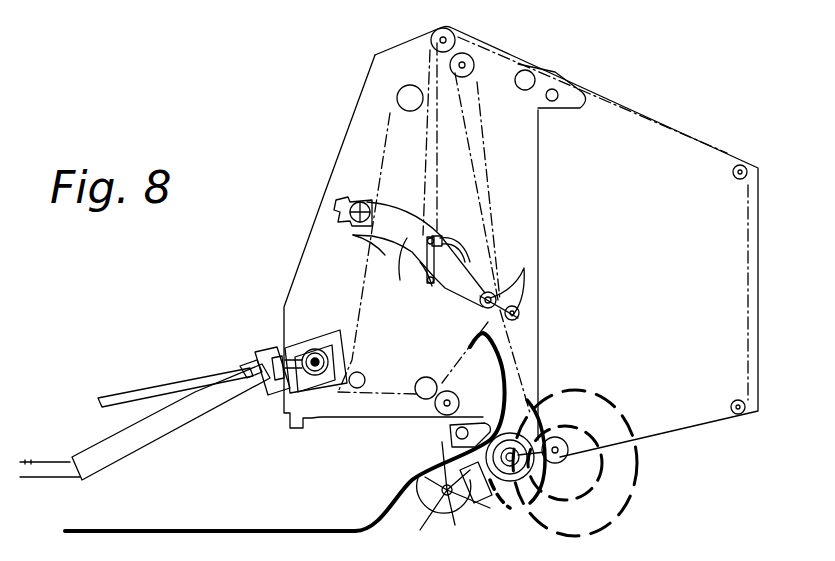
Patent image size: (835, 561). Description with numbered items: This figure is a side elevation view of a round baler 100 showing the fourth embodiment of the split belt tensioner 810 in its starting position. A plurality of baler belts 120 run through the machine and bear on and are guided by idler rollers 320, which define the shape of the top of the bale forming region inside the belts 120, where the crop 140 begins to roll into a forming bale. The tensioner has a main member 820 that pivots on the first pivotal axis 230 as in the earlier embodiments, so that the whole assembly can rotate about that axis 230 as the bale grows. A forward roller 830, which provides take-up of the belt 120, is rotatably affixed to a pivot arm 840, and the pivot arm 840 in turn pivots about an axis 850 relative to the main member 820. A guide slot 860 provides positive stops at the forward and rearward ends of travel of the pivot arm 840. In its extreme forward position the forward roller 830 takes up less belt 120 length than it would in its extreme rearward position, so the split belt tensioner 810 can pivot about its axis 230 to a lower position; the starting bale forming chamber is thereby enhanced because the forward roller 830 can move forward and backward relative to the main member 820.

The baler 100 is at (700, 485).
The baler belts 120 is at (387, 133).
The crop 140 is at (237, 530).
The first pivotal axis 230 is at (340, 211).
The idler rollers 320 is at (527, 263).
The split belt tensioner 810 is at (384, 253).
The main member 820 is at (480, 286).
The forward roller 830 is at (420, 258).
The pivot arm 840 is at (437, 290).
The axis 850 is at (432, 286).
The guide slot 860 is at (462, 224).